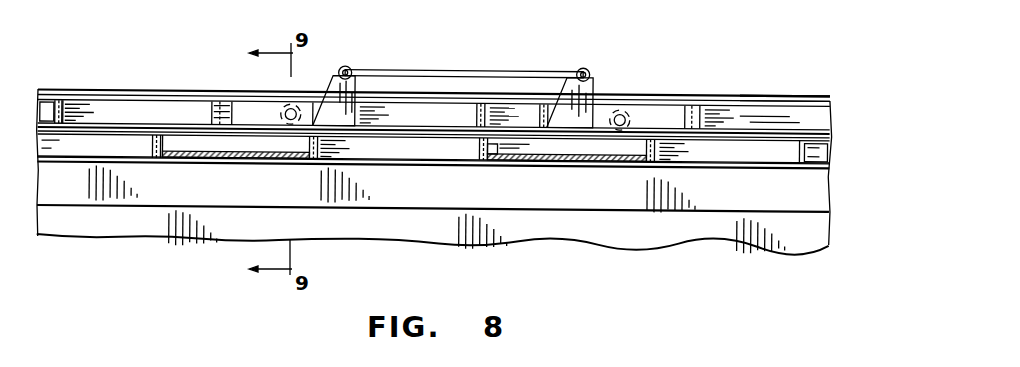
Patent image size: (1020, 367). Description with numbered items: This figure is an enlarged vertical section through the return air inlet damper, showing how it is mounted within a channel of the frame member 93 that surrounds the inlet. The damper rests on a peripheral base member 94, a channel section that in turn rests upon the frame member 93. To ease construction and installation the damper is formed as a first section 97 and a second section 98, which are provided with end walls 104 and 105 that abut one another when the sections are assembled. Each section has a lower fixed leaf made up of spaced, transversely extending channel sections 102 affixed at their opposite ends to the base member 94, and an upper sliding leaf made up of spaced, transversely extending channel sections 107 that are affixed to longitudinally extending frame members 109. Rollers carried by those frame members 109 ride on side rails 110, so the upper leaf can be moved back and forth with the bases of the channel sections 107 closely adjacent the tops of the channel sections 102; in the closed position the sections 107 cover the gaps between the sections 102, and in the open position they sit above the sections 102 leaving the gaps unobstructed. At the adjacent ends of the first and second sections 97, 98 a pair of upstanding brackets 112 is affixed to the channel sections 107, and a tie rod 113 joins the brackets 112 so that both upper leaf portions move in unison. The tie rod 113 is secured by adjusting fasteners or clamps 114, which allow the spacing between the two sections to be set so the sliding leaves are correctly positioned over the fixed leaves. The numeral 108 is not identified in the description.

The frame member 93 is at (817, 233).
The peripheral base member 94 is at (818, 193).
The first section 97 is at (105, 84).
The second section 98 is at (804, 86).
The channel sections 102 is at (213, 155).
The end wall 104 is at (478, 142).
The end wall 105 is at (490, 143).
The channel sections 107 is at (230, 100).
The end block 108 is at (757, 117).
The frame members 109 is at (620, 98).
The side rails 110 is at (727, 133).
The upstanding brackets 112 is at (320, 87).
The tie rod 113 is at (446, 67).
The adjusting fasteners or clamps 114 is at (350, 67).